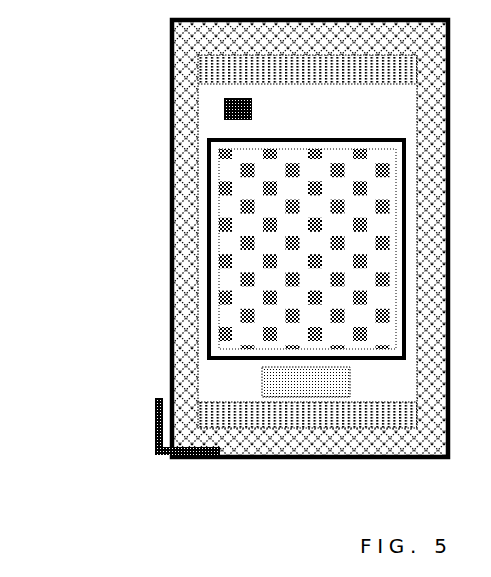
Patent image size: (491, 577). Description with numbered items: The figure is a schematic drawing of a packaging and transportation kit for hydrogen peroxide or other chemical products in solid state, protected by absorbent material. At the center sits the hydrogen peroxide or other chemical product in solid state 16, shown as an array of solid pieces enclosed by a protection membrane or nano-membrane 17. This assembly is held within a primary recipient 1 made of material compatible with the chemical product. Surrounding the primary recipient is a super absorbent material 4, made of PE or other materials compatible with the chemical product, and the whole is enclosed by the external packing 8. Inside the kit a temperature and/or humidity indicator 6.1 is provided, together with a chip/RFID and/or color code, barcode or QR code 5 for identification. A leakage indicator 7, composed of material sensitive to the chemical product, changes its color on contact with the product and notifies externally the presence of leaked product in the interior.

The primary recipient 1 is at (197, 230).
The super absorbent material 4 is at (178, 262).
The chip/RFID and/or color code, barcode or QR code 5 is at (282, 383).
The temperature and/or humidity indicator 6.1 is at (223, 109).
The leakage indicator 7 is at (155, 423).
The external packing 8 is at (168, 51).
The hydrogen peroxide or other chemical product in solid state 16 is at (227, 168).
The protection membrane or nano-membrane 17 is at (207, 198).